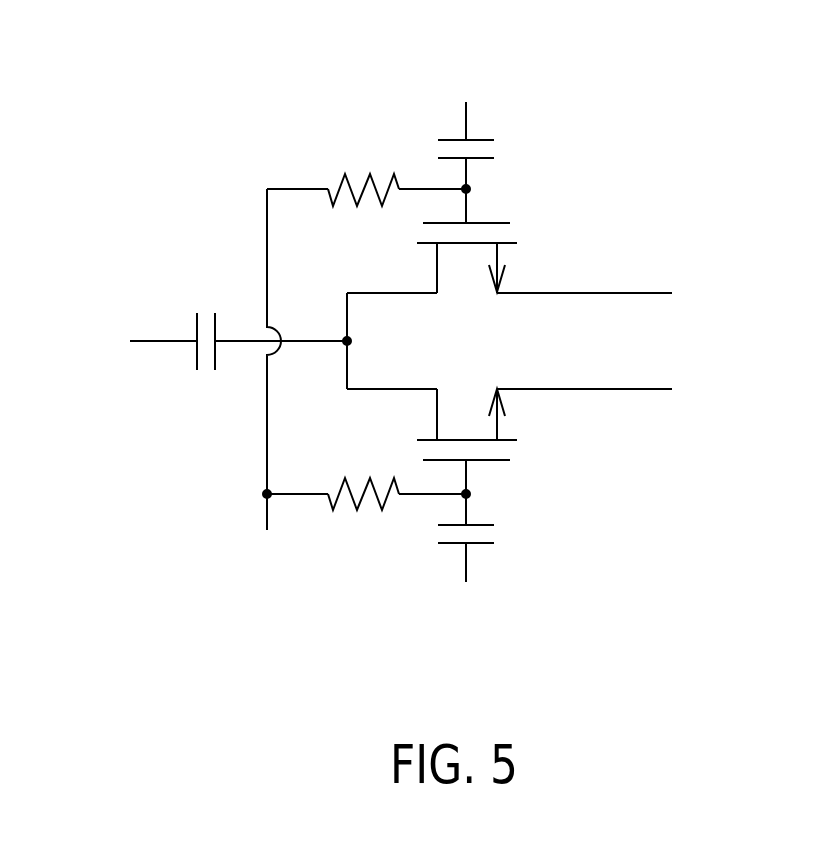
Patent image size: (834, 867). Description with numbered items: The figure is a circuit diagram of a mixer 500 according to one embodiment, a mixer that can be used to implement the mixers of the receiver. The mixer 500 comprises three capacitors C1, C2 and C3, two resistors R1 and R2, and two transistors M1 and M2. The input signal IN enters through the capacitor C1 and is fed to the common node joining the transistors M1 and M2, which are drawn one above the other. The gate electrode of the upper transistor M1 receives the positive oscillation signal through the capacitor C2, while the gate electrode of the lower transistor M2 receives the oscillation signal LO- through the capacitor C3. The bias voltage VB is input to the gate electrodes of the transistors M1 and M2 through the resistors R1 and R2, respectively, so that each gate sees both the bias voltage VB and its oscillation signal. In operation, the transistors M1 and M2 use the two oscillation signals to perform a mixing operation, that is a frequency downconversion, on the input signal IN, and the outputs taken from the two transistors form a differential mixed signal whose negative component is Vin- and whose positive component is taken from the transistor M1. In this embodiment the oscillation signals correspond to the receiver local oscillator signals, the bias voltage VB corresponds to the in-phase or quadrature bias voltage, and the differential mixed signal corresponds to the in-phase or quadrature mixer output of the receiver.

The mixer 500 is at (697, 112).
The capacitor C1 is at (205, 323).
The capacitor C2 is at (490, 179).
The capacitor C3 is at (490, 521).
The resistor R1 is at (363, 170).
The resistor R2 is at (363, 515).
The transistor M1 is at (467, 273).
The transistor M2 is at (467, 427).
The input signal IN is at (144, 340).
The bias voltage VB is at (266, 529).
The oscillation signal LO- is at (469, 579).
The differential mixed signal Vin- is at (616, 382).